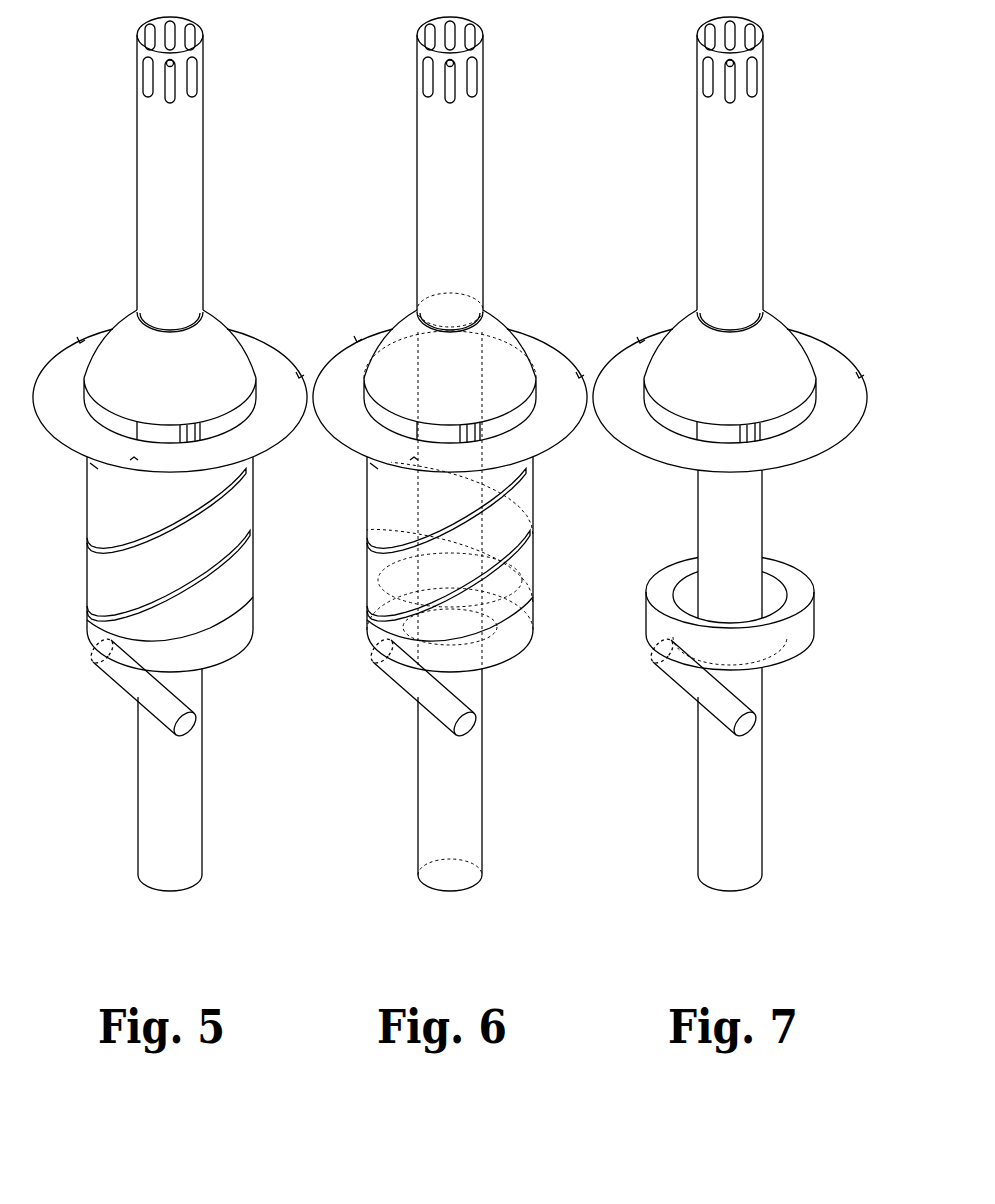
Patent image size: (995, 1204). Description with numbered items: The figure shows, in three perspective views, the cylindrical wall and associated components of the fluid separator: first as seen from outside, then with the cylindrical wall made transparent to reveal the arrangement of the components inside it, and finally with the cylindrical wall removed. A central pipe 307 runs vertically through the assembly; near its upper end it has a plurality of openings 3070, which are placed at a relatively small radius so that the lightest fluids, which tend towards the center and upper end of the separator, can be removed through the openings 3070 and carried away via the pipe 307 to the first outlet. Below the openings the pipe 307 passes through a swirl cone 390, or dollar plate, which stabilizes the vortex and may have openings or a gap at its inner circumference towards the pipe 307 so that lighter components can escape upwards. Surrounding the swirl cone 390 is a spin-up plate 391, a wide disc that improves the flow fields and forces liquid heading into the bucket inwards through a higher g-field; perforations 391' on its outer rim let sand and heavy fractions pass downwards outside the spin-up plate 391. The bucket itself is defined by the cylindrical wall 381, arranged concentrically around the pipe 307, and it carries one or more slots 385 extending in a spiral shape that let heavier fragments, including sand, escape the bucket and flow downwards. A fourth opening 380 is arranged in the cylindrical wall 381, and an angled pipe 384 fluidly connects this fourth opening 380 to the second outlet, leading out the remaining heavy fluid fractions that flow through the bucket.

In FIG. 5, the openings 3070 is at (235, 62).
In FIG. 6, the openings 3070 is at (506, 62).
In FIG. 7, the openings 3070 is at (784, 62).
In FIG. 5, the pipe 307 is at (219, 174).
In FIG. 6, the pipe 307 is at (498, 446).
In FIG. 7, the pipe 307 is at (776, 174).
In FIG. 5, the swirl cone 390 is at (182, 345).
In FIG. 7, the swirl cone 390 is at (744, 349).
In FIG. 5, the spin-up plate 391 is at (174, 380).
In FIG. 6, the spin-up plate 391 is at (464, 385).
In FIG. 7, the spin-up plate 391 is at (736, 384).
In FIG. 5, the perforations 391' is at (187, 333).
In FIG. 6, the fourth opening 380 is at (413, 564).
In FIG. 5, the cylindrical wall 381 is at (207, 564).
In FIG. 5, the slots 385 is at (73, 555).
In FIG. 5, the pipe 384 is at (119, 687).
In FIG. 6, the pipe 384 is at (392, 687).
In FIG. 7, the pipe 384 is at (670, 687).